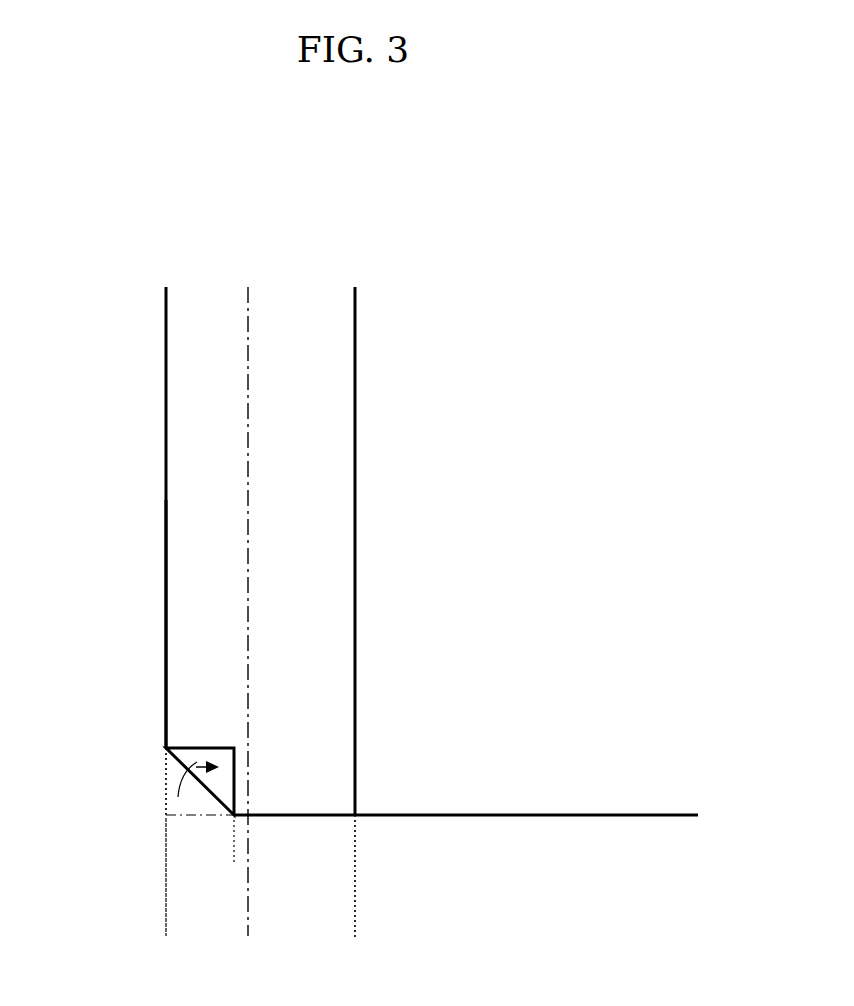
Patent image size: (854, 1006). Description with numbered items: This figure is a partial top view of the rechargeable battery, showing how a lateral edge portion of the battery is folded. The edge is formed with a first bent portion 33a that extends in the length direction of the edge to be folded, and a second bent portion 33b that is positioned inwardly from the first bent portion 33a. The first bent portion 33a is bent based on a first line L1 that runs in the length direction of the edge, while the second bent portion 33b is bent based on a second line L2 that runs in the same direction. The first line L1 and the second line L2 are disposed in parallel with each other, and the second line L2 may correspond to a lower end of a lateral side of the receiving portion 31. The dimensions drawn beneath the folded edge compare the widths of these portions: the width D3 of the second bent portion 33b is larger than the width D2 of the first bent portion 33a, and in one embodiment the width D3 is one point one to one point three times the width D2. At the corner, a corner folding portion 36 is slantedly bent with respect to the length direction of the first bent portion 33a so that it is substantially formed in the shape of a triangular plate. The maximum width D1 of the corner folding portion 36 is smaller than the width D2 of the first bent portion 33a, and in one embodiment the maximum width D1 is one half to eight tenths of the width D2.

The first line L1 is at (247, 432).
The second line L2 is at (412, 442).
The first bent portion 33a is at (195, 538).
The second bent portion 33b is at (292, 615).
The corner folding portion 36 is at (188, 756).
The receiving portion 31 is at (523, 778).
The maximum width of the corner folding portion D1 is at (234, 853).
The width of the first bent portion D2 is at (248, 928).
The width of the second bent portion D3 is at (355, 928).